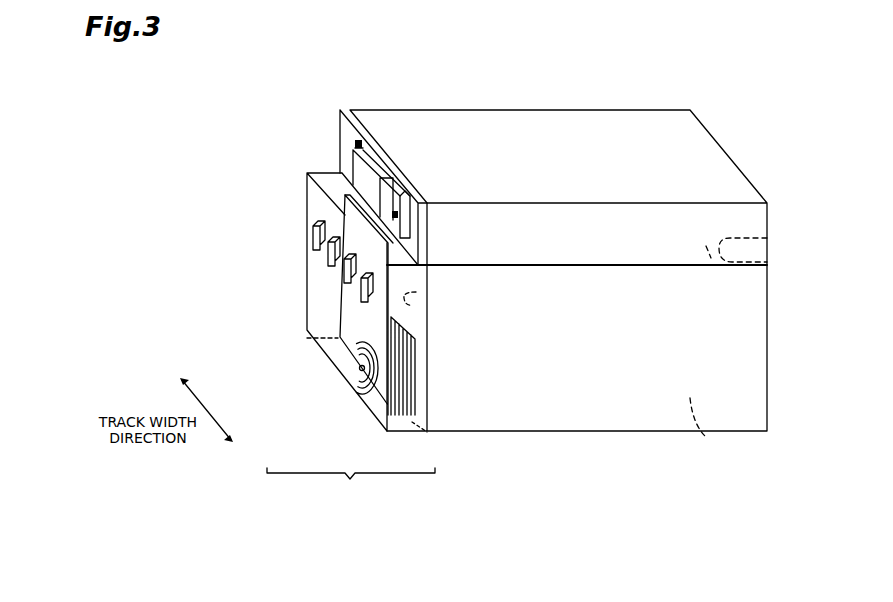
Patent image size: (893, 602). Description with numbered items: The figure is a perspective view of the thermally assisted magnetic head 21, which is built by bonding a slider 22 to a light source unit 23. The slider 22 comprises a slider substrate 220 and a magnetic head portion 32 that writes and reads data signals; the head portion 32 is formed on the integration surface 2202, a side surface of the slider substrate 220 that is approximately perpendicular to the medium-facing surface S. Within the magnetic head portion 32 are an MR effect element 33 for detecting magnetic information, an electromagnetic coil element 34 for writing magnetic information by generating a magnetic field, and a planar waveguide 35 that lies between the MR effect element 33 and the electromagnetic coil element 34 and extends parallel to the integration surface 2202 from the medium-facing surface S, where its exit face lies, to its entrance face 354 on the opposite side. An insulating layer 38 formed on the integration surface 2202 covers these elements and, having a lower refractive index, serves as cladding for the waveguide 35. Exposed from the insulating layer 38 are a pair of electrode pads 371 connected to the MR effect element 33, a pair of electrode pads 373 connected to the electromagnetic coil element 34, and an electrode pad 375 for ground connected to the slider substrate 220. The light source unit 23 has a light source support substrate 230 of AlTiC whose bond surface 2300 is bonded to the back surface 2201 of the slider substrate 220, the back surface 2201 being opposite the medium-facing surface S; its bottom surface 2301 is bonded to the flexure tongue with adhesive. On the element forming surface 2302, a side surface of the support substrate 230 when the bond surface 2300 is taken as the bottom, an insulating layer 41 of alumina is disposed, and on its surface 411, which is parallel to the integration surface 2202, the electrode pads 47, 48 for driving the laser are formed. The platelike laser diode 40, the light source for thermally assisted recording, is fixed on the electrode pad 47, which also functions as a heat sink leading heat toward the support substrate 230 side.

The thermally assisted magnetic head 21 is at (750, 83).
The slider 22 is at (293, 297).
The light source unit 23 is at (293, 154).
The magnetic head portion 32 is at (351, 400).
The MR effect element 33 is at (407, 421).
The electromagnetic coil element 34 is at (358, 389).
The waveguide 35 is at (337, 345).
The insulating layer 38 is at (307, 338).
The laser diode 40 is at (370, 187).
The insulating layer 41 is at (360, 118).
The electrode pad 47 is at (358, 118).
The electrode pad 48 is at (401, 195).
The slider substrate 220 is at (575, 433).
The light source support substrate 230 is at (529, 127).
The entrance face 354 is at (344, 198).
The electrode pads 371 is at (366, 284).
The electrode pads 373 is at (344, 268).
The electrode pad 375 is at (313, 230).
The surface 411 is at (343, 157).
The back surface 2201 is at (768, 237).
The integration surface 2202 is at (415, 305).
The bond surface 2300 is at (768, 265).
The bottom surface 2301 is at (615, 122).
The element forming surface 2302 is at (414, 230).
The medium-facing surface S is at (703, 439).